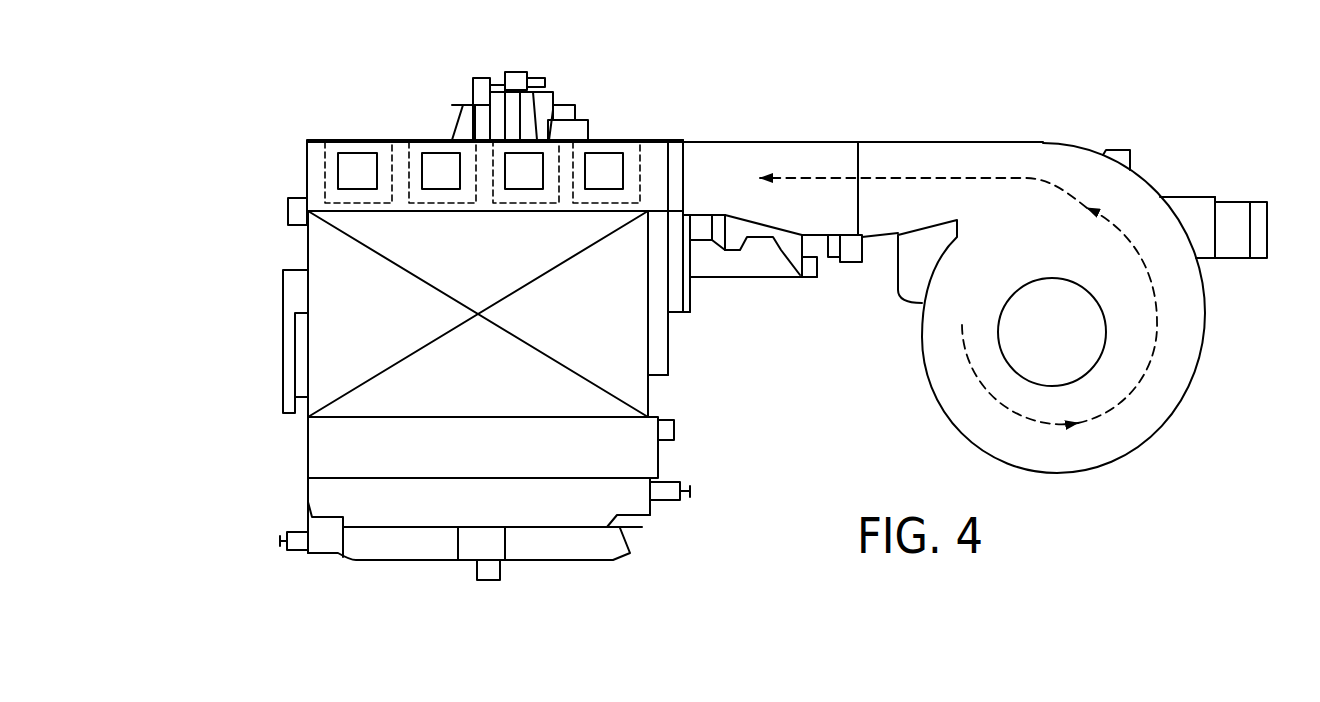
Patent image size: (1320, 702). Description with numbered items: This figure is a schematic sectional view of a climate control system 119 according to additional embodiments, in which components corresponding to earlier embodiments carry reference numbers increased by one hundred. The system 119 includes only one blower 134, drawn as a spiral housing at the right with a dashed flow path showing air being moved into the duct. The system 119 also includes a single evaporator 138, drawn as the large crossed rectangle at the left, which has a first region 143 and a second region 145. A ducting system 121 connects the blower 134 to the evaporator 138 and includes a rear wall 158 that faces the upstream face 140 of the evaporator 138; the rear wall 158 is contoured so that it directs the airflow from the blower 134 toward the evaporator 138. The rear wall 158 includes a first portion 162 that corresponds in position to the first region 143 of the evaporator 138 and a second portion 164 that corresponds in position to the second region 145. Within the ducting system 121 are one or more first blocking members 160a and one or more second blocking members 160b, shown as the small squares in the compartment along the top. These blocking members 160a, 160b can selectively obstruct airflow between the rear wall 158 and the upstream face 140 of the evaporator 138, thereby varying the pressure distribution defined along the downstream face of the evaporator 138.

The climate control system 119 is at (449, 305).
The ducting system 121 is at (702, 137).
The blower 134 is at (1075, 325).
The evaporator 138 is at (358, 350).
The upstream face 140 is at (595, 212).
The first region 143 is at (608, 326).
The second region 145 is at (412, 325).
The rear wall 158 is at (597, 135).
The first blocking members 160a is at (518, 162).
The second blocking members 160b is at (357, 160).
The first portion 162 is at (565, 140).
The second portion 164 is at (398, 138).